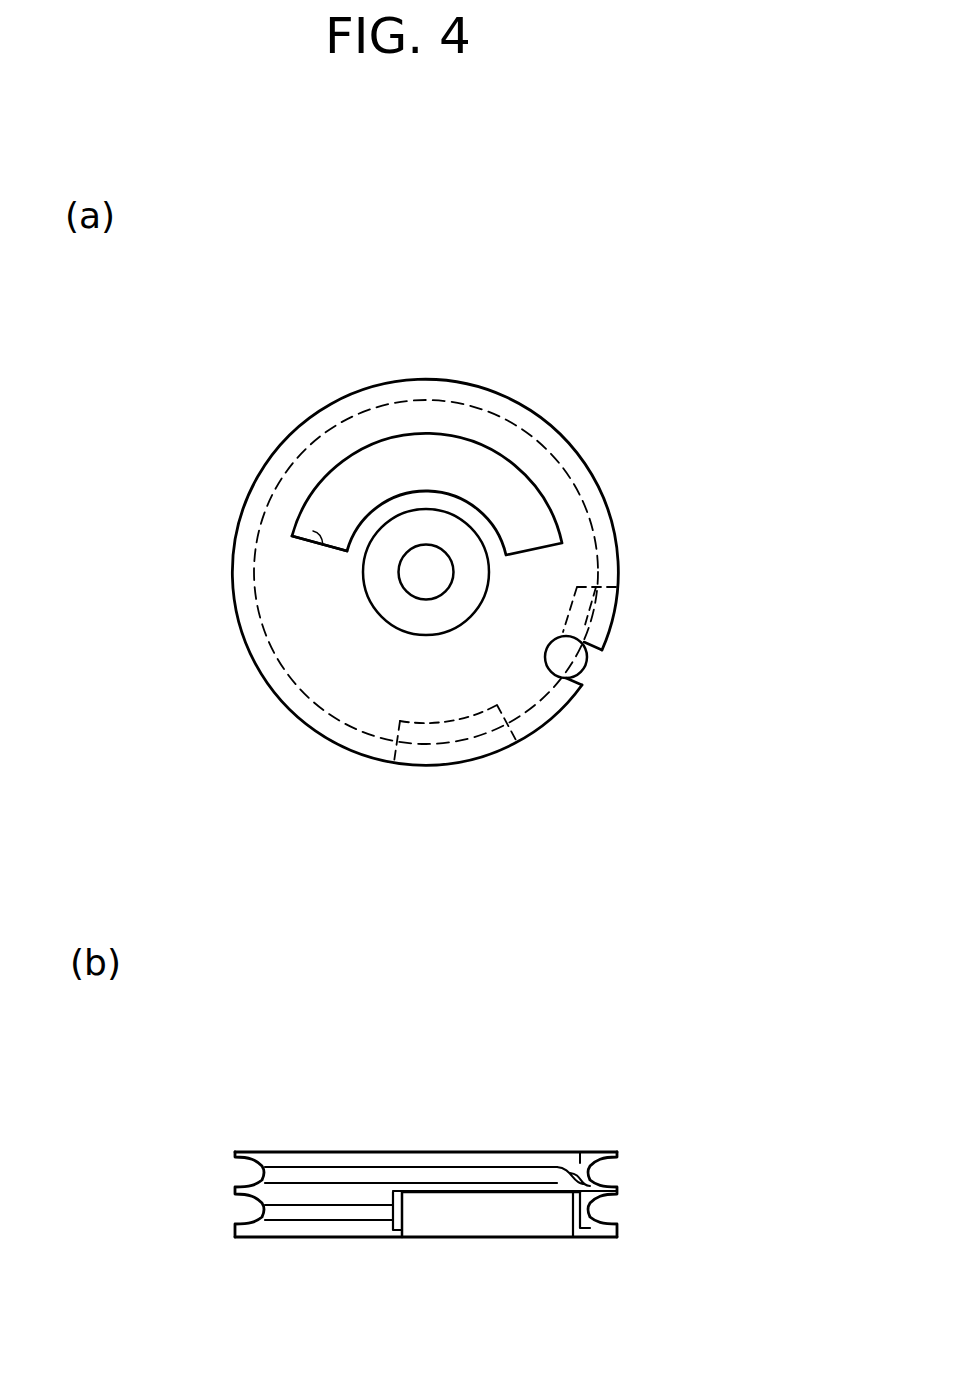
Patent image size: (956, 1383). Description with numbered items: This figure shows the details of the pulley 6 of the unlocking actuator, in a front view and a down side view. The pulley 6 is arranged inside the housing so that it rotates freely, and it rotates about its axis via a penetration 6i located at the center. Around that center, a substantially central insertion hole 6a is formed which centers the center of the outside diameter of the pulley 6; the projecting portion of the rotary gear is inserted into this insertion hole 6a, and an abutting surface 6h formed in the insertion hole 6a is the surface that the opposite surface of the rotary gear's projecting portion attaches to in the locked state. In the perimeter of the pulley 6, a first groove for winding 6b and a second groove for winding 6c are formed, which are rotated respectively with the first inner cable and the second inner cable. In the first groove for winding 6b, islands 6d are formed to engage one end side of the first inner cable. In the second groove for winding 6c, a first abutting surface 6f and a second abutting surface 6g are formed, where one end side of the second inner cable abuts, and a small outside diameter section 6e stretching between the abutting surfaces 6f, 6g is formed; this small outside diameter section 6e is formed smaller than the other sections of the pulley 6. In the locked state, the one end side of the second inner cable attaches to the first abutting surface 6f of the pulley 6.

The pulley 6 is at (578, 338).
The insertion hole 6a is at (388, 467).
The first groove for winding 6b is at (243, 1178).
The second groove for winding 6c is at (240, 1213).
The islands 6d is at (583, 650).
The small outside diameter section 6e is at (517, 742).
The first abutting surface 6f is at (619, 606).
The second abutting surface 6g is at (408, 763).
The abutting surface 6h is at (315, 532).
The penetration 6i is at (428, 570).